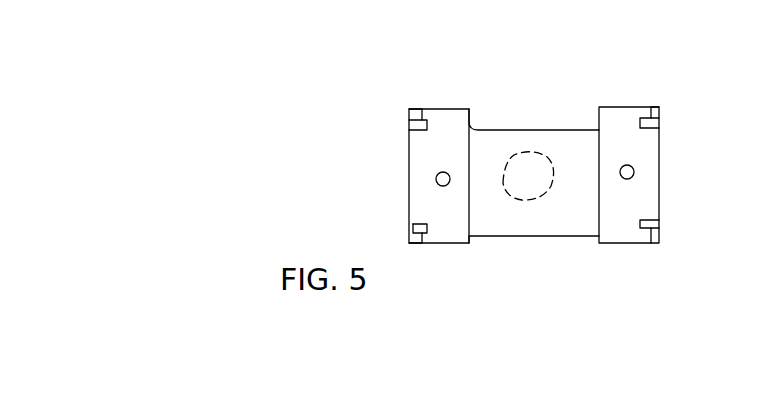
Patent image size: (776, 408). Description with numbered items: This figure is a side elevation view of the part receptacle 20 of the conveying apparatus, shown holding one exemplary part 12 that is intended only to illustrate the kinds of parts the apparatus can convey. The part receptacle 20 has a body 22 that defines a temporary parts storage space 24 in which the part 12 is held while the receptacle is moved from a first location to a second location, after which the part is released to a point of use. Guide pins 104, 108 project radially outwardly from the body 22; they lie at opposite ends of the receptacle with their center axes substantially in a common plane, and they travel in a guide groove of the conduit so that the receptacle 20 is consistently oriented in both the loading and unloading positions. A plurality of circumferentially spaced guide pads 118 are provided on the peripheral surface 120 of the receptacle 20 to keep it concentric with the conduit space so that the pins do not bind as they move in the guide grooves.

The part 12 is at (548, 167).
The part receptacle 20 is at (462, 108).
The body 22 is at (518, 140).
The temporary parts storage space 24 is at (497, 202).
The guide pin 104 is at (438, 185).
The guide pin 108 is at (632, 175).
The guide pads 118 is at (423, 118).
The peripheral surface 120 is at (416, 145).